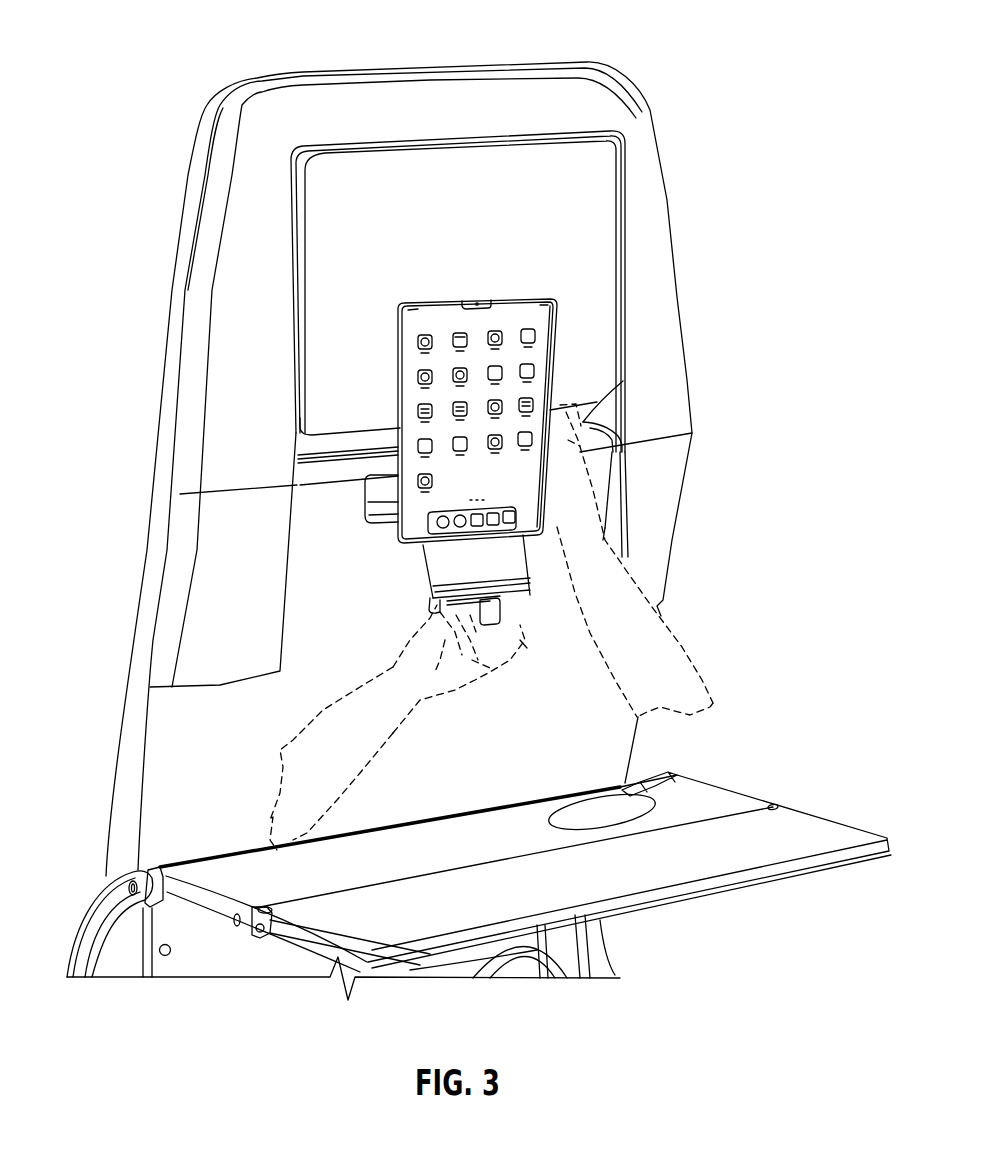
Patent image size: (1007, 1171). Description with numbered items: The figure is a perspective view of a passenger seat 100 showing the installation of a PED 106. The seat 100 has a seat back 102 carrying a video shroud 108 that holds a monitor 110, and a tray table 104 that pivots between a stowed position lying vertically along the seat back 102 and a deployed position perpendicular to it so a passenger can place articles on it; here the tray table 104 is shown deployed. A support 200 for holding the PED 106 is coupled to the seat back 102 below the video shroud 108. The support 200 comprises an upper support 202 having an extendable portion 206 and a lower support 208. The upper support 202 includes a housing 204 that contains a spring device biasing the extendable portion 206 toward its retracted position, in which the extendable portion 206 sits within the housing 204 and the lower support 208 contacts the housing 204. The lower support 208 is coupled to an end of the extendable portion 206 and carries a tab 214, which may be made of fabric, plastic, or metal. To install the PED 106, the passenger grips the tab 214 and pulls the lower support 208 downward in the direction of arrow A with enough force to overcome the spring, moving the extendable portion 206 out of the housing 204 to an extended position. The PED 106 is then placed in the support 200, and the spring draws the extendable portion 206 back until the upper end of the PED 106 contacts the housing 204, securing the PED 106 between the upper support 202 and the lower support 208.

The seat 100 is at (128, 55).
The seat back 102 is at (162, 518).
The tray table 104 is at (825, 835).
The PED 106 is at (548, 353).
The video shroud 108 is at (657, 218).
The monitor 110 is at (553, 213).
The support 200 is at (378, 543).
The upper support 202 is at (365, 483).
The housing 204 is at (355, 505).
The extendable portion 206 is at (502, 558).
The lower support 208 is at (528, 588).
The tab 214 is at (489, 616).
The arrow A is at (525, 650).